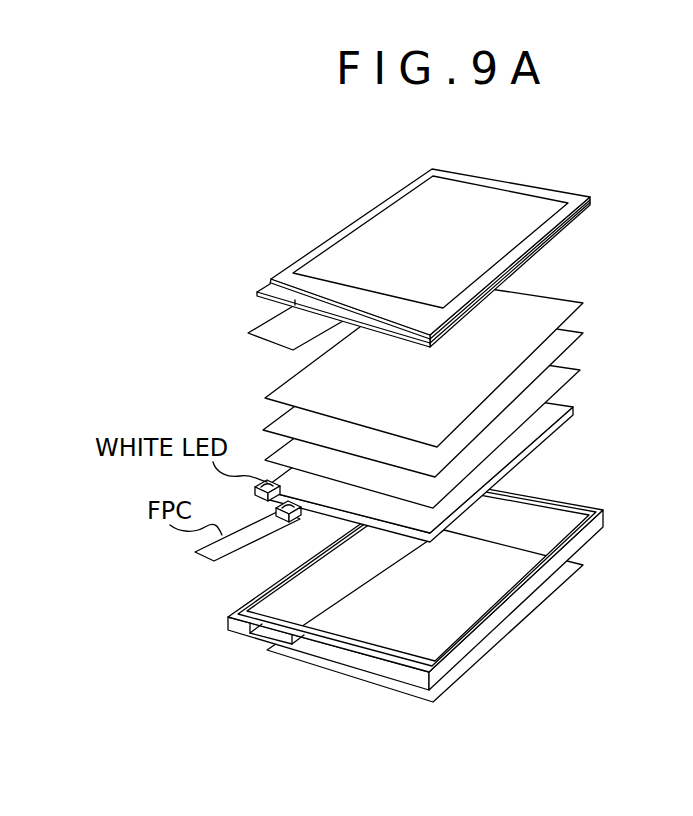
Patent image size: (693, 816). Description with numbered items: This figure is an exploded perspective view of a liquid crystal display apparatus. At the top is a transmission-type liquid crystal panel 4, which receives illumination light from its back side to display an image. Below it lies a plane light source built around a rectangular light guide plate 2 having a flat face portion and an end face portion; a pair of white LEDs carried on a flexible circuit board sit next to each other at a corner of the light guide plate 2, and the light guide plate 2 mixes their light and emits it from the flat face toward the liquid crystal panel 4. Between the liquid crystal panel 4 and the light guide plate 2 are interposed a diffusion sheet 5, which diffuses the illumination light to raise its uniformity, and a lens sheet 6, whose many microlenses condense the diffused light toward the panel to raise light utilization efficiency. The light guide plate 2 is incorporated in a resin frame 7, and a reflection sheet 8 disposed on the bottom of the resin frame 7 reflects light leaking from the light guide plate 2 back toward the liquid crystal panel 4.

The liquid crystal panel 4 is at (591, 197).
The lens sheet 6 is at (584, 333).
The diffusion sheet 5 is at (581, 370).
The light guide plate 2 is at (565, 430).
The resin frame 7 is at (604, 510).
The reflection sheet 8 is at (584, 566).